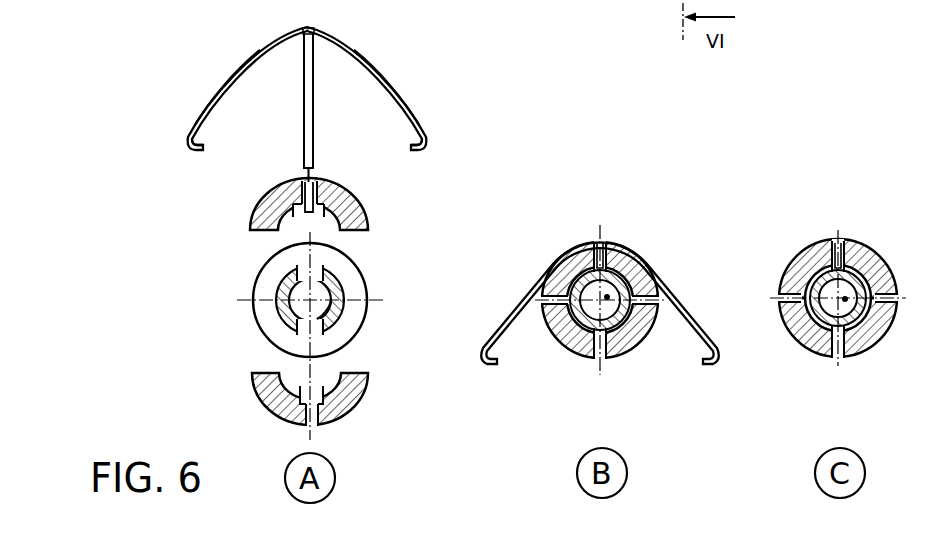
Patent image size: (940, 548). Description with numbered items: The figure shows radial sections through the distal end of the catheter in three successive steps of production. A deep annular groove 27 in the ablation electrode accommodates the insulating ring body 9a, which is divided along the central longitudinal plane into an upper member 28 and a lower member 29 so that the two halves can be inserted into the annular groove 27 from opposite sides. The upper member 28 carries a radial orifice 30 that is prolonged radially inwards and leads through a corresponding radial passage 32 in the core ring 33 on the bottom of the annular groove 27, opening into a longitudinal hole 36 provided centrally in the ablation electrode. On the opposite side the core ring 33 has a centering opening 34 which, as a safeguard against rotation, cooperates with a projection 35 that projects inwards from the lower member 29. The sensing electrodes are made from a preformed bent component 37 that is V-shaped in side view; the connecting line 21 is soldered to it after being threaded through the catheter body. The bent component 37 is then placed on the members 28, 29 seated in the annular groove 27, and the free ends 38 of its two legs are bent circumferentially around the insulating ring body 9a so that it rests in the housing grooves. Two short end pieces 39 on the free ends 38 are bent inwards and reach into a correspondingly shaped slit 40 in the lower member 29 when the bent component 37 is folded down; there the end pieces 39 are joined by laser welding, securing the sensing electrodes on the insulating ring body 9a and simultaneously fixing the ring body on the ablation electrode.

The insulating ring body 9a is at (240, 232).
The connecting line 21 is at (309, 97).
The annular groove 27 is at (357, 290).
The member 28 is at (353, 212).
The member 29 is at (346, 405).
The radial orifice 30 is at (313, 182).
The radial passage 32 is at (318, 277).
The core ring 33 is at (340, 303).
The centering opening 34 is at (318, 321).
The projection 35 is at (300, 385).
The longitudinal hole 36 is at (330, 311).
The bent component 37 is at (378, 61).
The free ends 38 is at (186, 136).
The end pieces 39 is at (195, 152).
The slit 40 is at (600, 352).